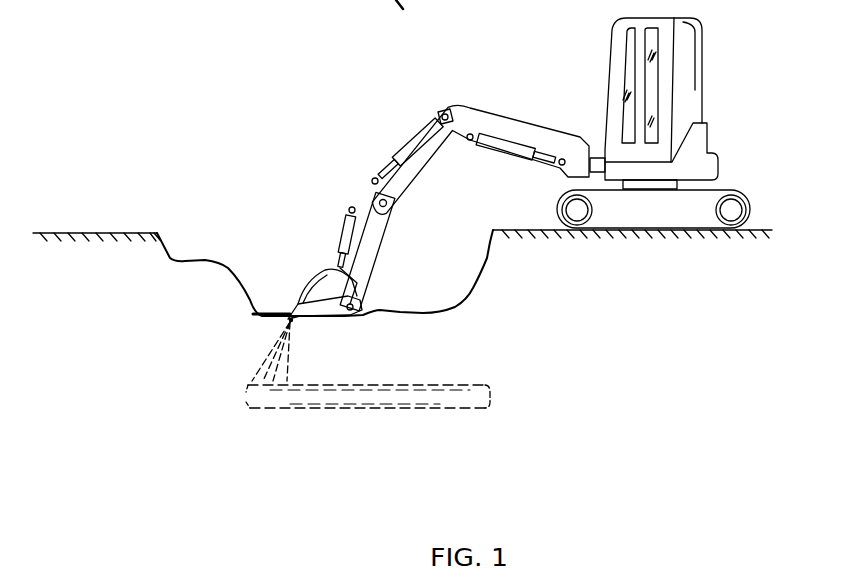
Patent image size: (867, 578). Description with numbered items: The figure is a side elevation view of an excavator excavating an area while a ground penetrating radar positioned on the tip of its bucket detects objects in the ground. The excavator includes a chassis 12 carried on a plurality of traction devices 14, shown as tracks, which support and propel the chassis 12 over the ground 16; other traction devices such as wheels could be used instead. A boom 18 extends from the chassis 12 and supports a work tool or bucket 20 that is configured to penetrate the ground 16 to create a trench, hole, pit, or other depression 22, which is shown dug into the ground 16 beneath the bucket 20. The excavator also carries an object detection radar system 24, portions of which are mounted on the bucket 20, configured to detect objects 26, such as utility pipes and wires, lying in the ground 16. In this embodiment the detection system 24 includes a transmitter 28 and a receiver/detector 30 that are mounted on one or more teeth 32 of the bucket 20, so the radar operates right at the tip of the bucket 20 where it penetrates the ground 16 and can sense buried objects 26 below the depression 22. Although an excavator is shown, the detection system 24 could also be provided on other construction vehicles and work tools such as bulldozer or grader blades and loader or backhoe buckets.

The chassis 12 is at (720, 137).
The traction devices 14 is at (745, 181).
The ground 16 is at (762, 228).
The boom 18 is at (469, 108).
The bucket 20 is at (296, 256).
The depression 22 is at (224, 216).
The object detection radar system 24 is at (712, 576).
The objects 26 is at (252, 382).
The transmitter 28 is at (294, 325).
The receiver/detector 30 is at (294, 325).
The teeth 32 is at (282, 300).